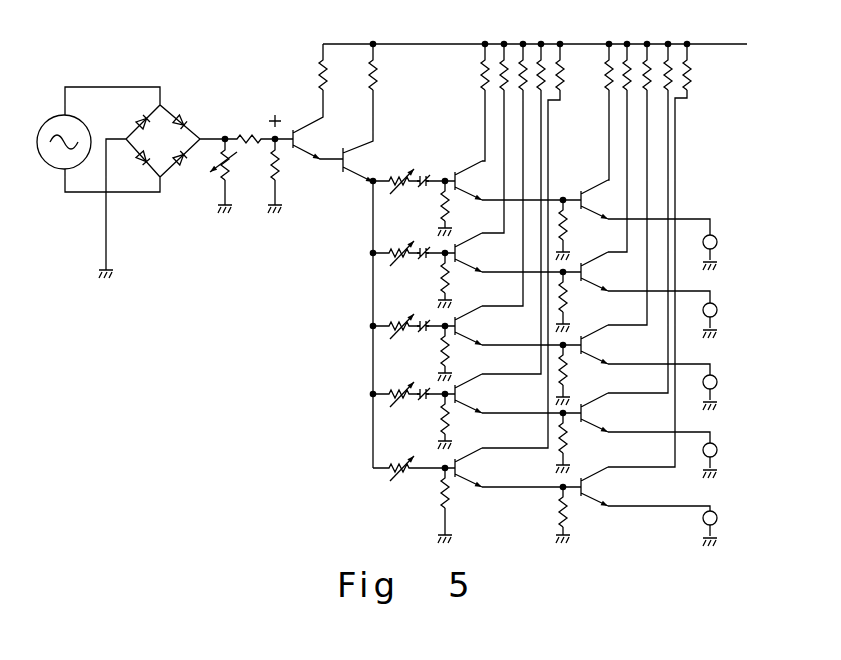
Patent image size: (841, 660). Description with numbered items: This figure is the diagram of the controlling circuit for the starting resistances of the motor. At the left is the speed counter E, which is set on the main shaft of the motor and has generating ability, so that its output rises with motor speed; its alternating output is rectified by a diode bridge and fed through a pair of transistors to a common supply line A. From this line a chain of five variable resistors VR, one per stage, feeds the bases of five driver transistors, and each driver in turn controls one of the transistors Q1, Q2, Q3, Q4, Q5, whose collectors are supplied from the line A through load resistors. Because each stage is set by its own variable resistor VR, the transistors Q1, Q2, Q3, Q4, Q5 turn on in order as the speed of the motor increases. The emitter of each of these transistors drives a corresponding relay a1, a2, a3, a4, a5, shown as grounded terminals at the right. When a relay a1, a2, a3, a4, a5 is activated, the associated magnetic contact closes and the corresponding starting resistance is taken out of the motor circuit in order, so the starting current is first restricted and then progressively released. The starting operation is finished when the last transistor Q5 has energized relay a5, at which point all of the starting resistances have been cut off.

The speed counter E is at (52, 168).
The power supply line A is at (538, 30).
The variable resistor VR is at (394, 319).
The transistor Q1 is at (578, 196).
The transistor Q2 is at (589, 262).
The transistor Q3 is at (589, 336).
The transistor Q4 is at (591, 403).
The transistor Q5 is at (591, 477).
The relay a1 is at (723, 251).
The relay a2 is at (723, 319).
The relay a3 is at (723, 391).
The relay a4 is at (723, 459).
The relay a5 is at (575, 369).